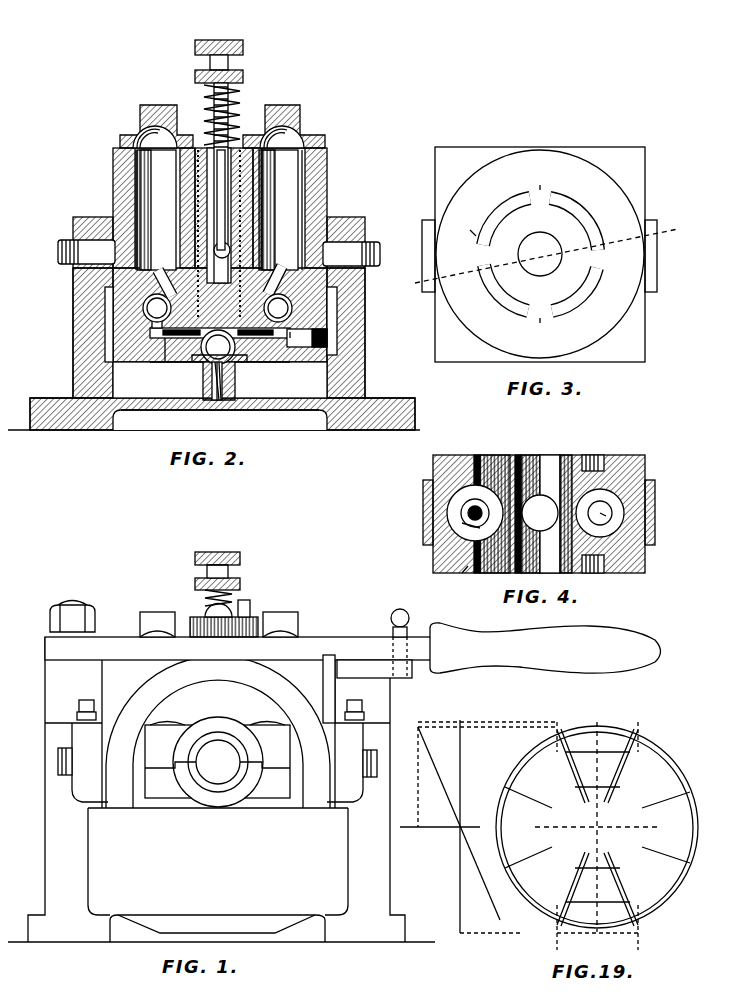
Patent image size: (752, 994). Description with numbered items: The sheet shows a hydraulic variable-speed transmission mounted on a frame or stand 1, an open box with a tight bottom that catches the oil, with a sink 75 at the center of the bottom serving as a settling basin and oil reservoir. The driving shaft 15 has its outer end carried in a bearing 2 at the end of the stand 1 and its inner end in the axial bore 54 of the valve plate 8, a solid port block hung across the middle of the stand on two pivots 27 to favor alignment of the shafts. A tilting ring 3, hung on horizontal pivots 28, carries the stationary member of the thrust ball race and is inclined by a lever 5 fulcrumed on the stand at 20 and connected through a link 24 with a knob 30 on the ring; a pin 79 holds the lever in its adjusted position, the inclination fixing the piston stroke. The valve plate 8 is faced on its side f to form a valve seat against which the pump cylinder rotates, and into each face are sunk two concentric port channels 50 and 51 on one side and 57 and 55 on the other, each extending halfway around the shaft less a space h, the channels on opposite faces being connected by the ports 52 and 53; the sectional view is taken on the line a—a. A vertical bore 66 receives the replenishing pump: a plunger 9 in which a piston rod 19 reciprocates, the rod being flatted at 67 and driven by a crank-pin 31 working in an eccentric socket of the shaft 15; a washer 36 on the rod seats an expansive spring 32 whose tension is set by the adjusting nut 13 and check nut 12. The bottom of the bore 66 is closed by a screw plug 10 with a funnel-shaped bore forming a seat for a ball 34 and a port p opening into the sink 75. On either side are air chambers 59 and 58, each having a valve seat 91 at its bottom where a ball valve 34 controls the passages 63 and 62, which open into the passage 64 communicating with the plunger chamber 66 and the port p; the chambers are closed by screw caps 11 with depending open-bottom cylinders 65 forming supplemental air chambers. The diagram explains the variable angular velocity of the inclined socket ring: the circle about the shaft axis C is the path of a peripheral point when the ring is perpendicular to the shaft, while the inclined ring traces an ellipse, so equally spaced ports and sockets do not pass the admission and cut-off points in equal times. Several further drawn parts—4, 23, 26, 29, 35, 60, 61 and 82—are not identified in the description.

In FIG. 2, the frame or stand 1 is at (222, 349).
In FIG. 1, the frame or stand 1 is at (216, 789).
In FIG. 1, the bearing 2 is at (217, 761).
In FIG. 1, the tilting ring 3 is at (218, 744).
In FIG. 1, the bracket 4 is at (367, 689).
In FIG. 1, the lever 5 is at (247, 648).
In FIG. 2, the valve plate or port block 8 is at (221, 273).
In FIG. 3, the valve plate or port block 8 is at (539, 254).
In FIG. 4, the valve plate or port block 8 is at (539, 514).
In FIG. 1, the valve plate or port block 8 is at (218, 732).
In FIG. 2, the plunger 9 is at (208, 180).
In FIG. 4, the plunger 9 is at (575, 455).
In FIG. 2, the screw plug 10 is at (224, 377).
In FIG. 2, the screw cap 11 is at (138, 108).
In FIG. 1, the screw cap 11 is at (138, 617).
In FIG. 2, the check nut 12 is at (230, 54).
In FIG. 1, the check nut 12 is at (205, 557).
In FIG. 2, the adjusting nut 13 is at (230, 76).
In FIG. 1, the adjusting nut 13 is at (204, 577).
In FIG. 1, the driving shaft 15 is at (217, 762).
In FIG. 2, the piston rod 19 is at (222, 122).
In FIG. 1, the fulcrum 20 is at (72, 604).
In FIG. 1, the pin 23 is at (250, 603).
In FIG. 1, the link 24 is at (220, 620).
In FIG. 1, the bearing cap lug 26 is at (217, 717).
In FIG. 2, the pivot 27 is at (58, 251).
In FIG. 1, the horizontal pivot 28 is at (58, 758).
In FIG. 1, the screw 29 is at (79, 707).
In FIG. 1, the knob 30 is at (239, 572).
In FIG. 2, the crank-pin 31 is at (214, 250).
In FIG. 1, the spring 32 is at (208, 597).
In FIG. 2, the ball valve 34 is at (217, 331).
In FIG. 2, the plug 35 is at (330, 336).
In FIG. 2, the washer 36 is at (208, 148).
In FIG. 3, the port channel 50 is at (506, 221).
In FIG. 4, the port channel 50 is at (486, 573).
In FIG. 3, the port channel 51 is at (574, 224).
In FIG. 4, the port channel 51 is at (595, 573).
In FIG. 2, the port 52 is at (167, 283).
In FIG. 3, the port 52 is at (505, 288).
In FIG. 4, the port 52 is at (462, 532).
In FIG. 2, the port 53 is at (272, 280).
In FIG. 3, the port 53 is at (574, 289).
In FIG. 3, the axial bore 54 is at (540, 254).
In FIG. 4, the port channel 55 is at (593, 471).
In FIG. 4, the port channel 57 is at (483, 506).
In FIG. 2, the air chamber 58 is at (305, 184).
In FIG. 4, the air chamber 58 is at (618, 503).
In FIG. 2, the air chamber 59 is at (136, 180).
In FIG. 4, the air chamber 59 is at (462, 495).
In FIG. 4, the passage 60 is at (612, 513).
In FIG. 4, the passage 61 is at (462, 507).
In FIG. 2, the passage 62 is at (300, 346).
In FIG. 4, the passage 62 is at (606, 516).
In FIG. 2, the passage 63 is at (150, 334).
In FIG. 4, the passage 63 is at (470, 515).
In FIG. 2, the passage 64 is at (165, 362).
In FIG. 2, the depending cylinder 65 is at (162, 199).
In FIG. 2, the bore 66 is at (173, 355).
In FIG. 4, the bore 66 is at (540, 513).
In FIG. 2, the flat 67 is at (252, 173).
In FIG. 2, the sink 75 is at (220, 408).
In FIG. 1, the sink 75 is at (217, 928).
In FIG. 1, the pin 79 is at (526, 637).
In FIG. 2, the spring 82 is at (204, 93).
In FIG. 2, the valve seat 91 is at (147, 314).
In FIG. 2, the port p is at (212, 385).
In FIG. 3, the section line a is at (545, 256).
In FIG. 3, the space h is at (541, 256).
In FIG. 3, the face f is at (465, 226).
In FIG. 4, the face f is at (460, 582).
In FIG. 19, the shaft axis C is at (554, 825).